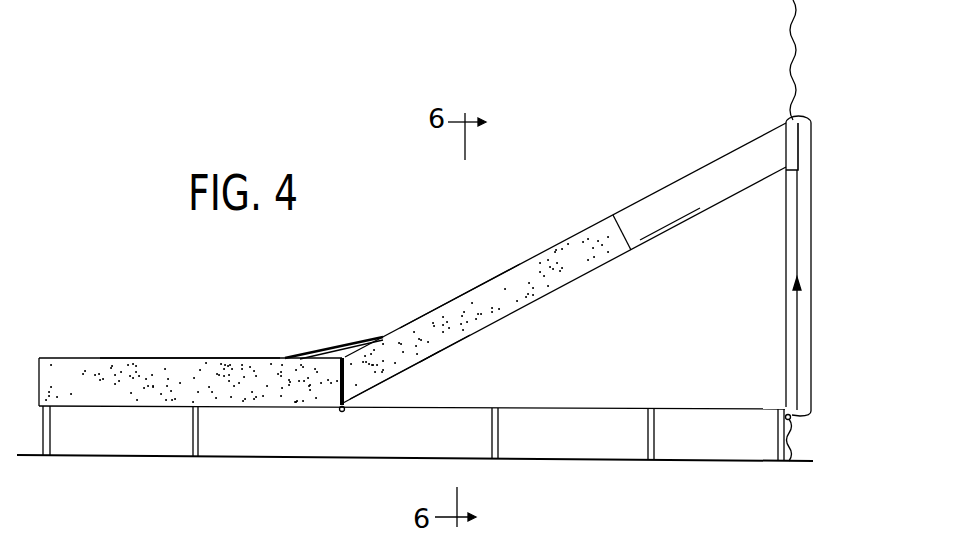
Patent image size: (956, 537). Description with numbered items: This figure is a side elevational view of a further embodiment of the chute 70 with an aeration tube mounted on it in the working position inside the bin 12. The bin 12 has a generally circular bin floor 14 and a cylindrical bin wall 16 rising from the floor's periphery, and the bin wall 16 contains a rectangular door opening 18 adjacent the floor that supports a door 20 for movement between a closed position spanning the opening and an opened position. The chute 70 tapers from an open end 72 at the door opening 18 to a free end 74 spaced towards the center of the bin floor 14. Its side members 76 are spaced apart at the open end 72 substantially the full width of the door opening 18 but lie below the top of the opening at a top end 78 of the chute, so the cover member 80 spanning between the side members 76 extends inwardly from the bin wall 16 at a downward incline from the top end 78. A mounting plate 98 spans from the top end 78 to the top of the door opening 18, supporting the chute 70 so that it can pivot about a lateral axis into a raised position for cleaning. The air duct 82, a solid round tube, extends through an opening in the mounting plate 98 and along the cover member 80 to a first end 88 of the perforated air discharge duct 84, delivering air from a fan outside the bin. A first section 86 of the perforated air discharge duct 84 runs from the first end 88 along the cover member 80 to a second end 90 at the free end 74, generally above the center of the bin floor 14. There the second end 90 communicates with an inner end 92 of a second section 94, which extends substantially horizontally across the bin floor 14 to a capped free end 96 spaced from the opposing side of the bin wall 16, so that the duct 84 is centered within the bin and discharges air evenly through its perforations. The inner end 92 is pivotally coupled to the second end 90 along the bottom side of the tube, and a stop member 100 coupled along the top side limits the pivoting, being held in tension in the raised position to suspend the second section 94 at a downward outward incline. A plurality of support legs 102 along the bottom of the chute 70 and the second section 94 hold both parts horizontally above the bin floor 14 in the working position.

The bin 12 is at (774, 78).
The bin floor 14 is at (610, 462).
The bin wall 16 is at (793, 20).
The door opening 18 is at (807, 278).
The door 20 is at (803, 308).
The chute 70 is at (334, 123).
The open end 72 is at (783, 262).
The free end 74 is at (377, 398).
The side members 76 is at (586, 307).
The top end 78 is at (787, 170).
The cover member 80 is at (510, 300).
The air duct 82 is at (652, 207).
The perforated air discharge duct 84 is at (260, 338).
The first section 86 is at (440, 320).
The first end 88 is at (610, 220).
The second end 90 is at (362, 380).
The inner end 92 is at (328, 380).
The second section 94 is at (180, 378).
The free end 96 is at (52, 373).
The mounting plate 98 is at (788, 150).
The stop member 100 is at (345, 345).
The support legs 102 is at (193, 434).